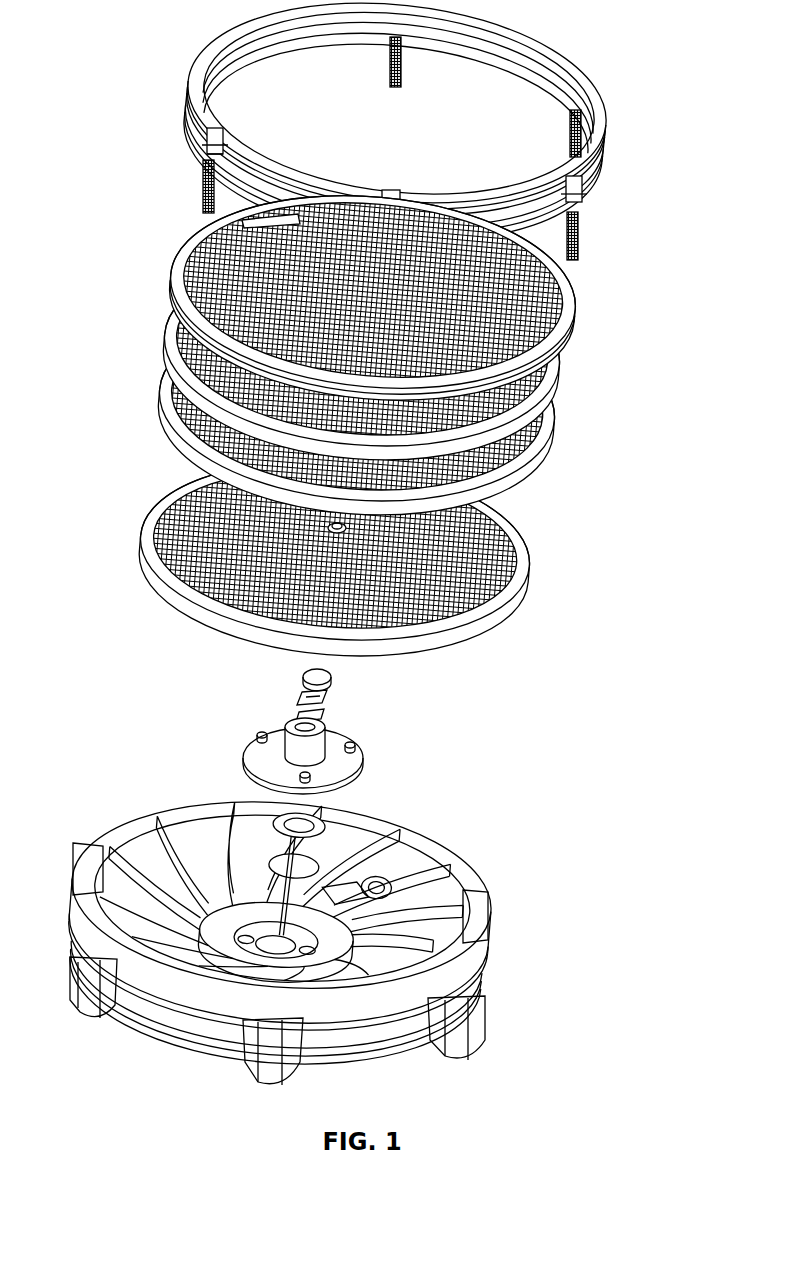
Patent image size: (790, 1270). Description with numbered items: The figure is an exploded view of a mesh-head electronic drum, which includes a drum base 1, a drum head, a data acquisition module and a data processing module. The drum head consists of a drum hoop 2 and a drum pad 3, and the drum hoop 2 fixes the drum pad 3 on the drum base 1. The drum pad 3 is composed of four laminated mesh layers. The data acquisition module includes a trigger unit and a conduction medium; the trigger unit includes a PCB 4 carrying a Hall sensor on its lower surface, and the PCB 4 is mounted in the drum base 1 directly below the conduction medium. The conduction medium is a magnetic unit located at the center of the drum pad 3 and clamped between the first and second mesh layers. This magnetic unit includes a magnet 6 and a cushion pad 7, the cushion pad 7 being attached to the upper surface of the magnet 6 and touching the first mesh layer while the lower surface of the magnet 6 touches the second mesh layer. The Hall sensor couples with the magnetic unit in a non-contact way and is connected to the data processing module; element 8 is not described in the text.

The drum base 1 is at (442, 961).
The drum hoop 2 is at (607, 137).
The drum pad 3 is at (378, 425).
The PCB 4 is at (330, 698).
The magnet 6 is at (328, 528).
The cushion pad 7 is at (217, 462).
The cap 8 is at (333, 680).